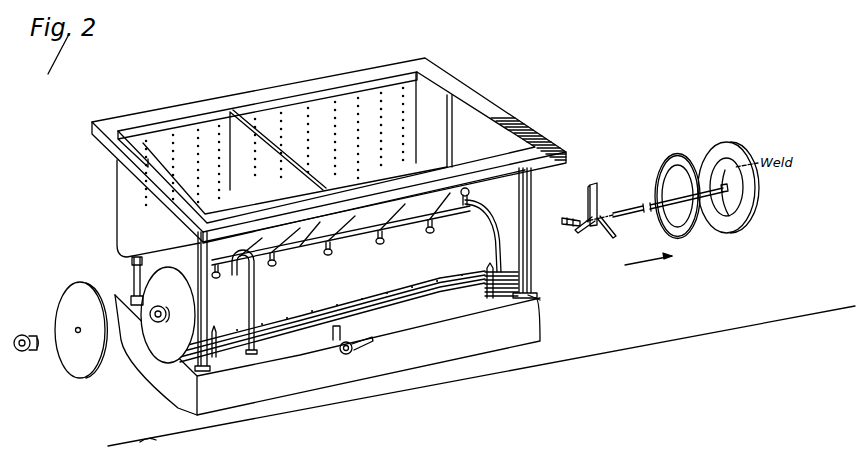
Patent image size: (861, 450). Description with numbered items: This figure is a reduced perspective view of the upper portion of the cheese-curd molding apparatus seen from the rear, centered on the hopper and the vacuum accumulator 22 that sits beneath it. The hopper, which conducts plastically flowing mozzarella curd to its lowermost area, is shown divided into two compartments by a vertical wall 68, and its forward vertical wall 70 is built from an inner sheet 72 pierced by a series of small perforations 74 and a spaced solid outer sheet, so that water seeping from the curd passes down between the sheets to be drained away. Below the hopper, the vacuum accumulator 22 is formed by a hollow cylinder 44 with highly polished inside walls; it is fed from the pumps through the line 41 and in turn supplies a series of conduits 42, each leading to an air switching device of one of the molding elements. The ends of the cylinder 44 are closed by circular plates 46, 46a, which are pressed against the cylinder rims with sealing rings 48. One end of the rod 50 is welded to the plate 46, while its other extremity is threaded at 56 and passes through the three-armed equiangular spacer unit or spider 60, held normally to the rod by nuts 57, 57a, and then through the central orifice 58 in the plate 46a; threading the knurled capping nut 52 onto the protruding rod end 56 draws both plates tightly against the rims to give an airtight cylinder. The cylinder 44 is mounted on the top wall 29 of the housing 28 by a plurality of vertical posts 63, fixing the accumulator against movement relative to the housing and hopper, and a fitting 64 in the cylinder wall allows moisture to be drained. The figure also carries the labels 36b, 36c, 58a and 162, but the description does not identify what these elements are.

The vacuum accumulator 22 is at (482, 253).
The housing 28 is at (178, 383).
The top wall 29 is at (440, 312).
The front post 36b is at (210, 310).
The right post 36c is at (537, 206).
The line 41 is at (255, 305).
The conduits 42 is at (415, 232).
The hollow cylinder 44 is at (365, 291).
The circular plate 46 is at (728, 182).
The circular plate 46a is at (60, 285).
The sealing rings 48 is at (686, 246).
The rod 50 is at (627, 203).
The knurled capping nut 52 is at (36, 335).
The threaded rod end 56 is at (578, 221).
The nut 57 is at (589, 238).
The nut 57a is at (605, 224).
The orifice 58 is at (738, 226).
The disc hole 58a is at (78, 334).
The spacer unit or spider 60 is at (596, 186).
The vertical posts 63 is at (222, 334).
The fitting 64 is at (330, 338).
The vertical wall 68 is at (247, 122).
The forward vertical wall 70 is at (417, 73).
The inner sheet 72 is at (413, 98).
The perforations 74 is at (360, 98).
The valves 162 is at (386, 238).